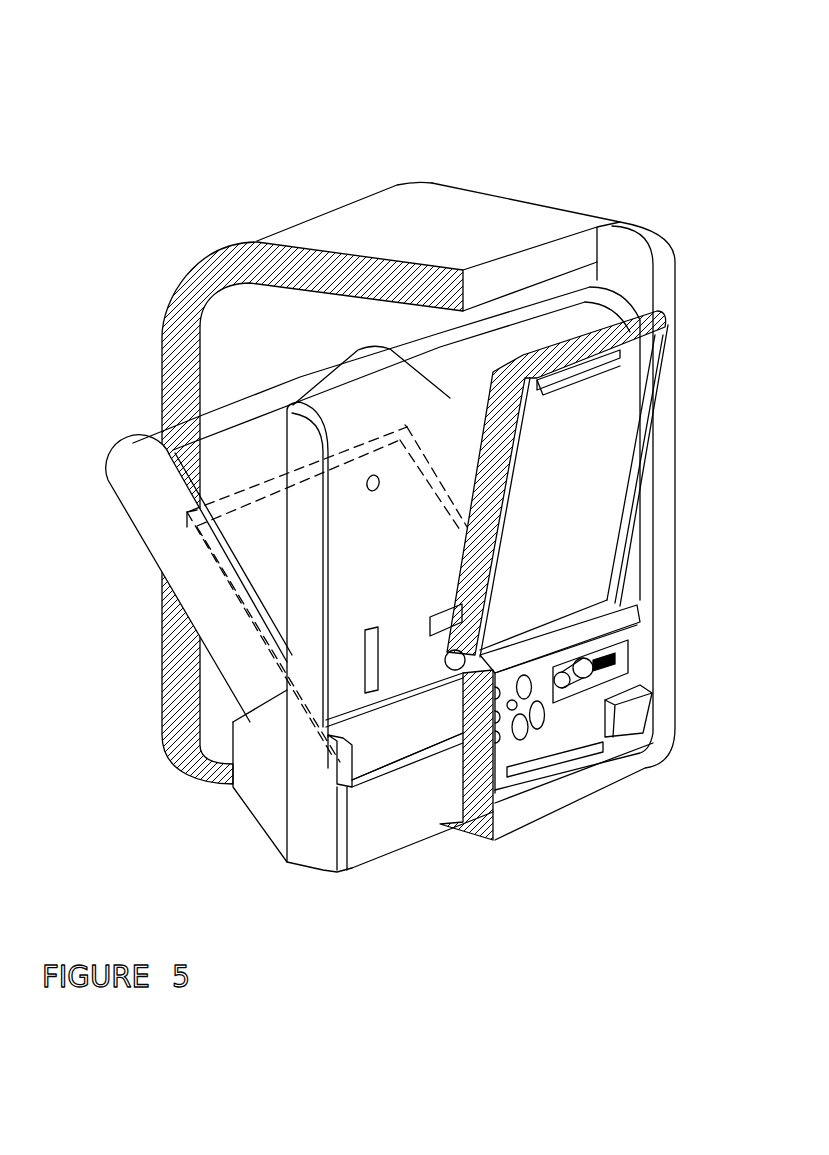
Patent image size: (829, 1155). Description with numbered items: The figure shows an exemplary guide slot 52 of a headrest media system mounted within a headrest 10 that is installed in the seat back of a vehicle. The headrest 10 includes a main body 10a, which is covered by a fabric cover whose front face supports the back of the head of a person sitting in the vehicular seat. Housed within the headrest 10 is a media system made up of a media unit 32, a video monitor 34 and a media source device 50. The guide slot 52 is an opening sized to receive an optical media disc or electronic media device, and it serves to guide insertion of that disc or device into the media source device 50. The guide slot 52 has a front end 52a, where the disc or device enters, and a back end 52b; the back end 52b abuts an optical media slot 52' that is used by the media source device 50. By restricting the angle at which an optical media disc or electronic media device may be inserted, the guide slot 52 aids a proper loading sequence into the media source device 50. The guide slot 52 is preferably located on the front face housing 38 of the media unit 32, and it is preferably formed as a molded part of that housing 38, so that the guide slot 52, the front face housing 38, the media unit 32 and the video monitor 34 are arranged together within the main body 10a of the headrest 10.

The headrest 10 is at (153, 150).
The main body 10a is at (500, 200).
The media unit 32 is at (323, 829).
The video monitor 34 is at (575, 514).
The front face housing 38 is at (633, 737).
The media source device 50 is at (164, 499).
The guide slot 52 is at (566, 726).
The front end 52a is at (555, 765).
The back end 52b is at (463, 737).
The optical media slot 52' is at (444, 820).